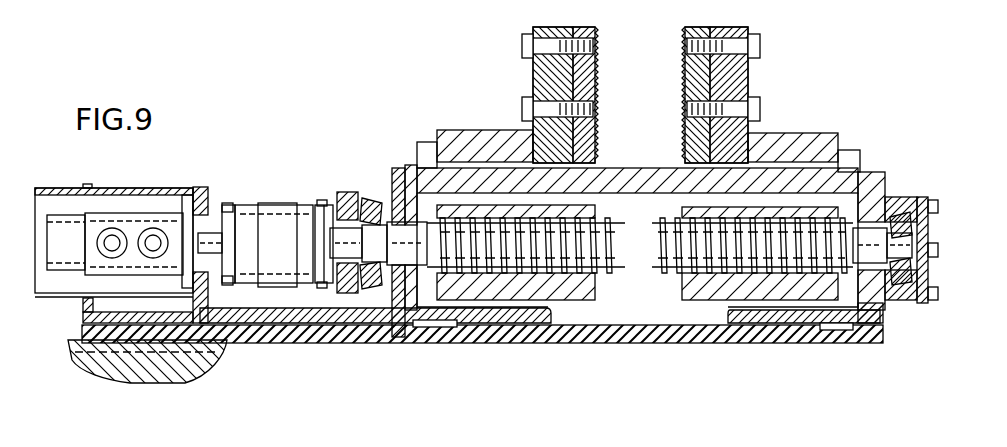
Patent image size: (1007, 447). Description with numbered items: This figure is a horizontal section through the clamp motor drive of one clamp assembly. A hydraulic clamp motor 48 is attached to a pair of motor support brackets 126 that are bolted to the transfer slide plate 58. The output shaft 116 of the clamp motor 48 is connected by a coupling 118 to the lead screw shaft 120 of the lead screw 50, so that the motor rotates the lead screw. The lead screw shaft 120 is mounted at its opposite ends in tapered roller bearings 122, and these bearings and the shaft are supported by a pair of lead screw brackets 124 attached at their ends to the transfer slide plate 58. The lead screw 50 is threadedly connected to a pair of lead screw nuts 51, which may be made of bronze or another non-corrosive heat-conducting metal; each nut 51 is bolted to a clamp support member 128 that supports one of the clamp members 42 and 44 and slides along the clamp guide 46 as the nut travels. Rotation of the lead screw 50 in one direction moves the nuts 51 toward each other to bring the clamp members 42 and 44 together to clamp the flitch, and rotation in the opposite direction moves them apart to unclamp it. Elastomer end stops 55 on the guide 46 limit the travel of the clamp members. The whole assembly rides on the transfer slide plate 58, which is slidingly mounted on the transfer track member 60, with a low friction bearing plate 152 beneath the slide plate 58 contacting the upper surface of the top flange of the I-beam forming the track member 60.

The clamp member 42 is at (594, 62).
The clamp member 44 is at (687, 72).
The clamp guide 46 is at (648, 352).
The hydraulic clamp motor 48 is at (128, 212).
The lead screw 50 is at (660, 305).
The lead screw nut 51 is at (600, 295).
The end stop 55 is at (427, 150).
The transfer slide plate 58 is at (527, 318).
The transfer track member 60 is at (203, 358).
The output shaft 116 is at (214, 236).
The coupling 118 is at (273, 207).
The lead screw shaft 120 is at (340, 232).
The tapered roller bearing 122 is at (379, 272).
The lead screw bracket 124 is at (400, 318).
The motor support bracket 126 is at (203, 188).
The clamp support member 128 is at (472, 130).
The bearing plate 152 is at (558, 335).